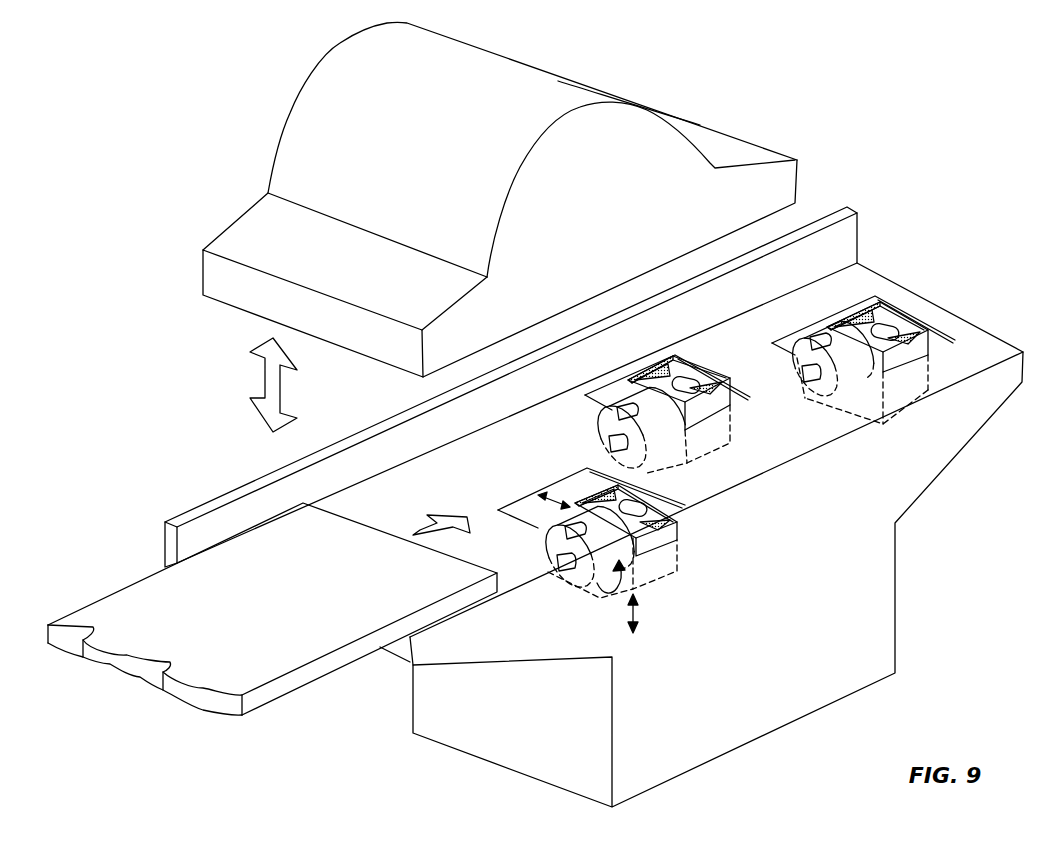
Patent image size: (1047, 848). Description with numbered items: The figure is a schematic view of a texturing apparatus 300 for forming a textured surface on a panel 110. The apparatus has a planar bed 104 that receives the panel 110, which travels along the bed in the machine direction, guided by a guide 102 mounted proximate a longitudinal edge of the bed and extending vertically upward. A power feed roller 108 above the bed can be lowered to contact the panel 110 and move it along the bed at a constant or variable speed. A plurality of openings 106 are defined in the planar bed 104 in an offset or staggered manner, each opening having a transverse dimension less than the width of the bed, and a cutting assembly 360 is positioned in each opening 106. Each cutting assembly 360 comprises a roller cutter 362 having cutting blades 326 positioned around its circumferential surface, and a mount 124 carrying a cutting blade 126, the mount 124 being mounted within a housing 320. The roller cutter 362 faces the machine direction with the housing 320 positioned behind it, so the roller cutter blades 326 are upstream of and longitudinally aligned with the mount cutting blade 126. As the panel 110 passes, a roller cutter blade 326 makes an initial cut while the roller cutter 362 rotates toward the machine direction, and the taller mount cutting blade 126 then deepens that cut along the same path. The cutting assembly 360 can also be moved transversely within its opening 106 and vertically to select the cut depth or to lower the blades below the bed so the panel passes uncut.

The texturing apparatus 300 is at (199, 97).
The power feed roller 108 is at (357, 70).
The guide 102 is at (828, 245).
The planar bed 104 is at (832, 300).
The panel 110 is at (162, 603).
The opening 106 is at (799, 345).
The mount 124 is at (843, 327).
The cutting blade 126 is at (890, 330).
The housing 320 is at (928, 380).
The cutting blade 326 is at (818, 393).
The cutting assembly 360 is at (882, 424).
The roller cutter 362 is at (840, 415).